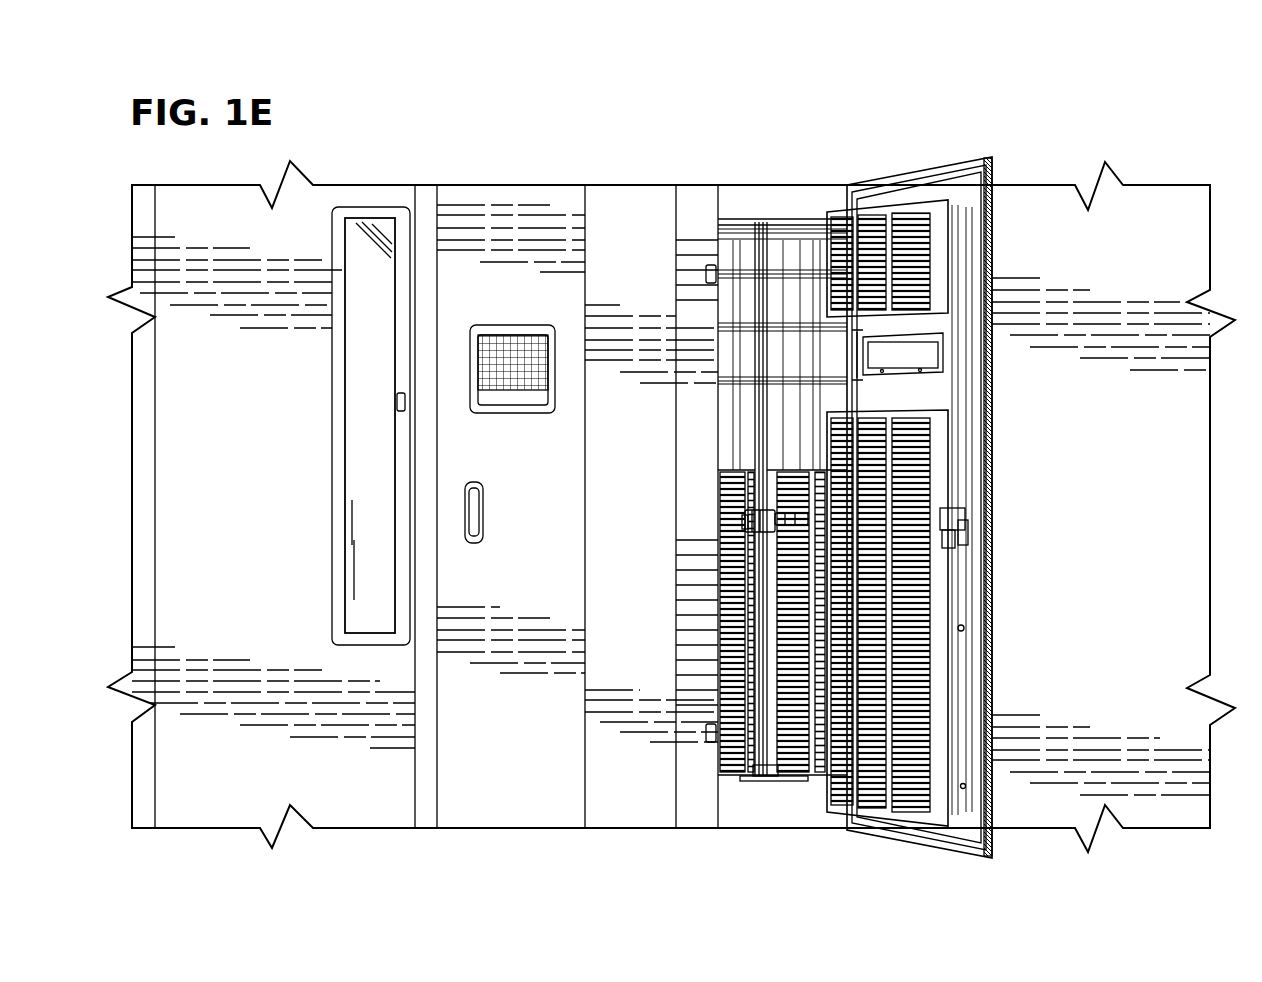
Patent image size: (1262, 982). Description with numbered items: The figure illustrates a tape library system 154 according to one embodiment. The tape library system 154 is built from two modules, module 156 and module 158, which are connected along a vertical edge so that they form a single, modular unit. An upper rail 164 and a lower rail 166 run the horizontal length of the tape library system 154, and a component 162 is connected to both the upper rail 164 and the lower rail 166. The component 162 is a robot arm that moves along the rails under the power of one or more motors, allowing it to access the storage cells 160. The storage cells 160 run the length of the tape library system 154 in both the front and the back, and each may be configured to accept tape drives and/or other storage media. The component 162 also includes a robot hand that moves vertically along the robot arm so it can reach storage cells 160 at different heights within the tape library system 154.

The tape library system 154 is at (1045, 160).
The module 156 is at (677, 845).
The module 158 is at (811, 503).
The storage cells 160 is at (933, 442).
The component 162 is at (745, 518).
The upper rail 164 is at (763, 215).
The lower rail 166 is at (645, 770).